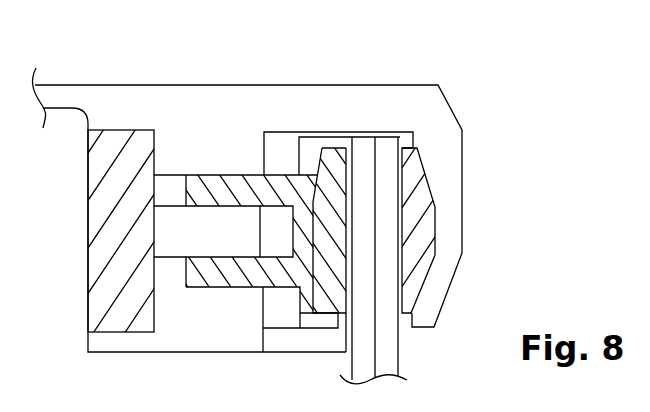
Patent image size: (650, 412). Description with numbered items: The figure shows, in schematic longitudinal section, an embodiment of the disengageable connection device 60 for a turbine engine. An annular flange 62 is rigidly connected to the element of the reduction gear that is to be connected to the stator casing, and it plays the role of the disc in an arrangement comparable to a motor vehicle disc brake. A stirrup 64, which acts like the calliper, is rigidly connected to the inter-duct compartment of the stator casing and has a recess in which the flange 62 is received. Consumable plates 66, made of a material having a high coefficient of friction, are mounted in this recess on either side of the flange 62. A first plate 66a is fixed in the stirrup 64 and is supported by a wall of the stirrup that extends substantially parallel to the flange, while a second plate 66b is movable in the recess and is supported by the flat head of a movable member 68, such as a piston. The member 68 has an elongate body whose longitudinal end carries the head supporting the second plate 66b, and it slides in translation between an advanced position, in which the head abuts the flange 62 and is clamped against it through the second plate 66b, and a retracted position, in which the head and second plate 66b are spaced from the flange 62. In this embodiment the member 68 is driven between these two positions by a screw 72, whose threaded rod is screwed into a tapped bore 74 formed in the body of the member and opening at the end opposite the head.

The disengageable connection device 60 is at (500, 97).
The annular flange 62 is at (388, 352).
The stirrup 64 is at (202, 105).
The plates 66 is at (410, 173).
The first plate 66a is at (425, 228).
The second plate 66b is at (332, 295).
The movable member 68 is at (218, 192).
The screw 72 is at (113, 296).
The tapped bore 74 is at (288, 258).